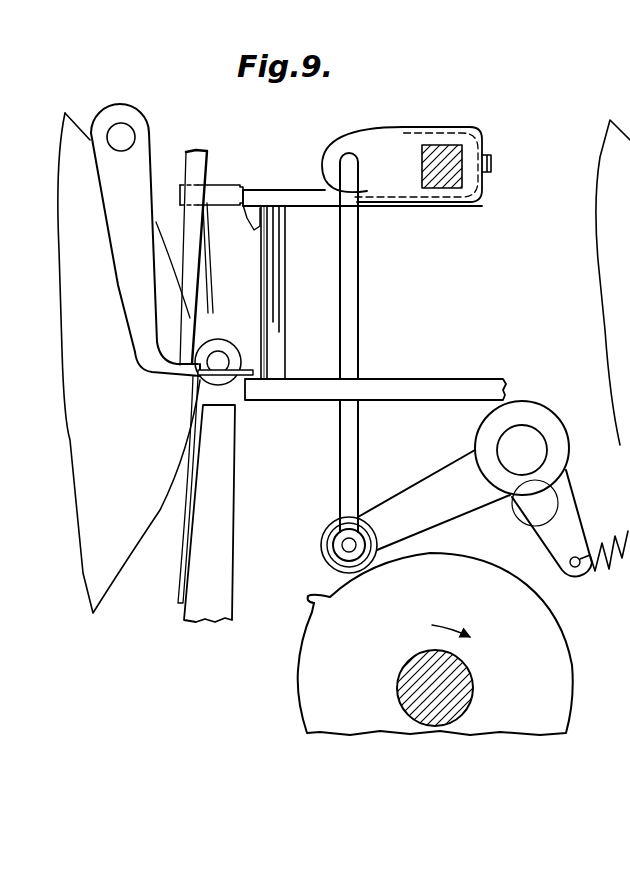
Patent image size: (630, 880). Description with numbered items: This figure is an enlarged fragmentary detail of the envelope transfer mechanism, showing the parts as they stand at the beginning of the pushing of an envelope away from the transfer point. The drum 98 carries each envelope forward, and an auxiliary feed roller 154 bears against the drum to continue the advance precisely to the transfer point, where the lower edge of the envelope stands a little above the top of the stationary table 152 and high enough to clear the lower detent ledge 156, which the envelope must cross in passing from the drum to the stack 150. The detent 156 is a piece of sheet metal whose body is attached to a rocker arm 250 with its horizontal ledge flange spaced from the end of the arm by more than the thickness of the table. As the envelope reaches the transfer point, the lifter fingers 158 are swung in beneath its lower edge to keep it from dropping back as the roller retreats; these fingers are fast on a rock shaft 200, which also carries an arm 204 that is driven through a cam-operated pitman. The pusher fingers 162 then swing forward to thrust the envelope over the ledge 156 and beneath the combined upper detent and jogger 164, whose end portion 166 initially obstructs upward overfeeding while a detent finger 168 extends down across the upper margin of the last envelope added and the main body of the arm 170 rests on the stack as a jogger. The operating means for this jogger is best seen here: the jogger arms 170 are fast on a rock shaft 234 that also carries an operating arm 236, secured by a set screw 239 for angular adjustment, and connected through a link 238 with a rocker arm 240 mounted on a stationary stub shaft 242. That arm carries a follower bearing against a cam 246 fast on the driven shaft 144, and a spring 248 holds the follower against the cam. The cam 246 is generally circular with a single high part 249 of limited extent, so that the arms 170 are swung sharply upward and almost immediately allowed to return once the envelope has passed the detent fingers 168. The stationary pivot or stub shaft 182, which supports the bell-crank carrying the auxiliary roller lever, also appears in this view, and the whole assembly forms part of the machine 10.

The lever arm 10 is at (144, 234).
The drum 98 is at (82, 358).
The driven shaft 144 is at (460, 688).
The stack 150 is at (256, 264).
The stationary table 152 is at (391, 392).
The auxiliary feed roller 154 is at (222, 378).
The lower detent ledge 156 is at (250, 336).
The lifter fingers 158 is at (142, 355).
The pusher fingers 162 is at (185, 215).
The combined upper detent and jogger 164 is at (263, 186).
The end portion 166 is at (225, 190).
The detent finger 168 is at (250, 214).
The jogger arm 170 is at (303, 208).
The stationary pivot or stub shaft 182 is at (517, 514).
The rock shaft 200 is at (125, 151).
The arm 204 is at (322, 535).
The rock shaft 234 is at (436, 148).
The operating arm 236 is at (365, 152).
The link 238 is at (358, 297).
The set screw 239 is at (491, 164).
The rocker arm 240 is at (400, 502).
The stationary stub shaft 242 is at (508, 462).
The cam 246 is at (417, 644).
The spring 248 is at (604, 532).
The high part 249 is at (305, 607).
The rocker arm 250 is at (216, 578).